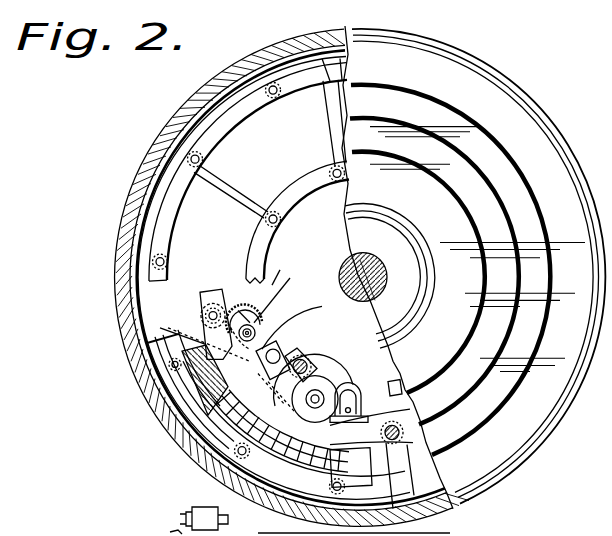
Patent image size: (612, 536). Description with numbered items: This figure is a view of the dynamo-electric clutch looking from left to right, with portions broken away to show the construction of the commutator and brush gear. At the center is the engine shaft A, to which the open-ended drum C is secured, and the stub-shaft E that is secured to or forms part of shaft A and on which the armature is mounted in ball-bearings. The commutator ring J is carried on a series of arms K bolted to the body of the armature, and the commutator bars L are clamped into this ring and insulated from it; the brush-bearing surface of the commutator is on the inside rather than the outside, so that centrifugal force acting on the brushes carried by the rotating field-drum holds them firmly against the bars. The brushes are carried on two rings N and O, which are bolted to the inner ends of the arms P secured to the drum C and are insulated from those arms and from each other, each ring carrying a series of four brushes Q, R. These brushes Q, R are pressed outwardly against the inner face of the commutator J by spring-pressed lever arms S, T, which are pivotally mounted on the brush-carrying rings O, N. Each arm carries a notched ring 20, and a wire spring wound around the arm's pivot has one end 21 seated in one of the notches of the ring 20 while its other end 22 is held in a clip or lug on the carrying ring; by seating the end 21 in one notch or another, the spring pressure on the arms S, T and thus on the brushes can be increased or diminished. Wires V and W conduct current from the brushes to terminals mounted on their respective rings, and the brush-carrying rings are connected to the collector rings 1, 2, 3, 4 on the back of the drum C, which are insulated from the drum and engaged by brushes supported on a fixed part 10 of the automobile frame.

The engine shaft A is at (387, 276).
The open-ended drum C is at (198, 458).
The stub-shaft E is at (345, 262).
The commutator ring J is at (172, 236).
The arms K is at (330, 118).
The commutator bars L is at (185, 378).
The brush-carrying ring N is at (212, 290).
The brush-carrying ring O is at (400, 418).
The arms P is at (168, 327).
The brush Q is at (355, 390).
The brush R is at (288, 313).
The spring-pressed lever arm S is at (330, 384).
The spring-pressed lever arm T is at (258, 322).
The wire V is at (388, 380).
The wire W is at (285, 337).
The collector ring 1 is at (418, 272).
The collector ring 2 is at (434, 271).
The collector ring 3 is at (450, 270).
The collector ring 4 is at (477, 249).
The fixed part of the frame 10 is at (218, 518).
The notched ring 20 is at (244, 307).
The spring end 21 is at (283, 269).
The spring end 22 is at (182, 331).